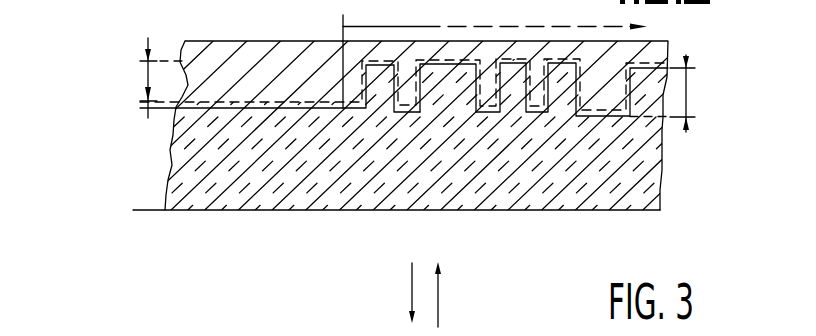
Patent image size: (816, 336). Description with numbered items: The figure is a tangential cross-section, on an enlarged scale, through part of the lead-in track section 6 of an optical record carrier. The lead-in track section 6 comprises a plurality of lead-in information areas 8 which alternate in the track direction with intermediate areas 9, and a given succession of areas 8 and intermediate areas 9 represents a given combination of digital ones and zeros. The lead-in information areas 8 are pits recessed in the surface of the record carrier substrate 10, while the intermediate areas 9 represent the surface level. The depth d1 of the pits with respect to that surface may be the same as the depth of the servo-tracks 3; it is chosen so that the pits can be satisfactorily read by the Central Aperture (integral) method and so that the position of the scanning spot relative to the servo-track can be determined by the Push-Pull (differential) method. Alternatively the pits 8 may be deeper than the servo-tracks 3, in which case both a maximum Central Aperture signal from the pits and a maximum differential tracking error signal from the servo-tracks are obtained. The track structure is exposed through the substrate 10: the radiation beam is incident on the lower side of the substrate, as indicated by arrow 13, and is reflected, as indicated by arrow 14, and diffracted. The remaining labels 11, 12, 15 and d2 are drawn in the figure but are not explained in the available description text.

The servo-track 3 is at (253, 108).
The lead-in track section 6 is at (523, 25).
The lead-in information area 8 is at (357, 102).
The intermediate area 9 is at (457, 70).
The record carrier substrate 10 is at (601, 204).
The coating layer 11 is at (385, 64).
The top surface 12 is at (217, 55).
The incident radiation beam 13 is at (452, 294).
The reflected radiation 14 is at (398, 293).
The recording region 15 is at (176, 30).
The pit depth d1 is at (669, 93).
The layer step height d2 is at (145, 78).